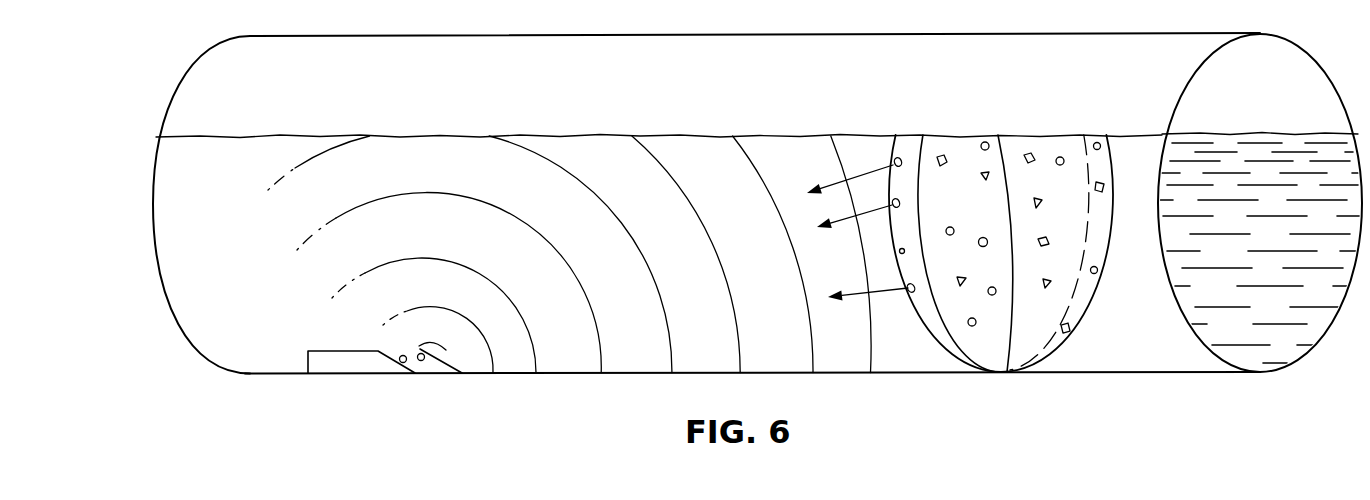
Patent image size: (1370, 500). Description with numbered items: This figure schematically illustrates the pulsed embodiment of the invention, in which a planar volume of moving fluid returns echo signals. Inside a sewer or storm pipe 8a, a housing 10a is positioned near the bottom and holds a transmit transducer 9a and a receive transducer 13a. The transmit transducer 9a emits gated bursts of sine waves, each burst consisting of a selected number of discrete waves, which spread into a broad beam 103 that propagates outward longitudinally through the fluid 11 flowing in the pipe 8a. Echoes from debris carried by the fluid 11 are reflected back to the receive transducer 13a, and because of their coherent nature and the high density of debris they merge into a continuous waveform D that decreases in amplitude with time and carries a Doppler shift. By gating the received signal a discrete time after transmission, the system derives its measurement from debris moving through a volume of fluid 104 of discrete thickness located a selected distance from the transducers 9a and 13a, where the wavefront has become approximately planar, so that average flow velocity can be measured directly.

The pipe 8a is at (182, 67).
The fluid 11 is at (298, 135).
The housing 10a is at (318, 350).
The receive transducer 13a is at (402, 363).
The transmit transducer 9a is at (424, 360).
The broad beam 103 is at (464, 350).
The volume of fluid 104 is at (1070, 345).
The waveform D is at (1058, 157).